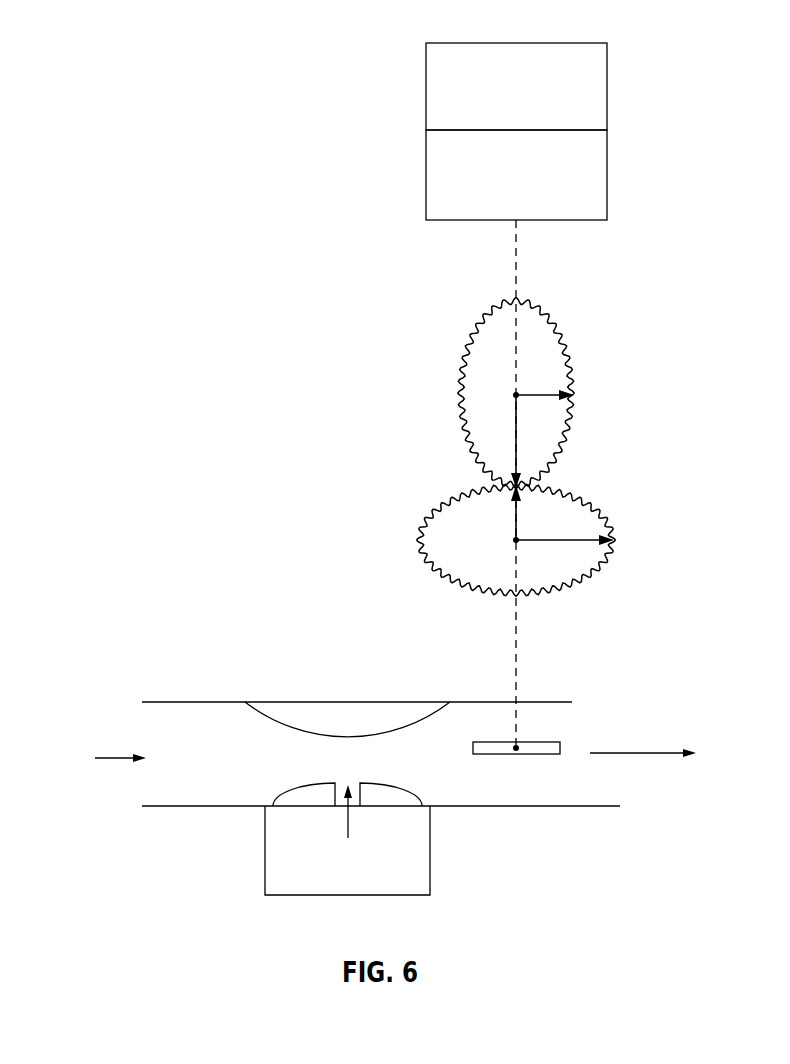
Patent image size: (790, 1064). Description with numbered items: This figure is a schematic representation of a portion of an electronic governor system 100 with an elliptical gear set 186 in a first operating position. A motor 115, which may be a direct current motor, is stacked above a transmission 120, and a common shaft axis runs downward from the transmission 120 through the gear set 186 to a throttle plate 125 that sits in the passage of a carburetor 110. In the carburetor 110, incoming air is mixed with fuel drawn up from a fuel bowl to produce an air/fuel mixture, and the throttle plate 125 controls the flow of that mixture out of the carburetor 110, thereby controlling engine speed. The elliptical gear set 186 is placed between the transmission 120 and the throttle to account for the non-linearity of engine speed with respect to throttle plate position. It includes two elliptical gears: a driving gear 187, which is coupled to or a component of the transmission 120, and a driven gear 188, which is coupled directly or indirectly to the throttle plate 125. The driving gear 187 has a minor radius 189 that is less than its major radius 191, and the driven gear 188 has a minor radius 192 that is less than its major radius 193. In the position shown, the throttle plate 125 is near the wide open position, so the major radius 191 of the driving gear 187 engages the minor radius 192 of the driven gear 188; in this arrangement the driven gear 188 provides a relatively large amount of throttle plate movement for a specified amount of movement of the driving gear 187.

The electronic governor system 100 is at (279, 419).
The carburetor 110 is at (202, 807).
The motor 115 is at (492, 43).
The transmission 120 is at (492, 222).
The throttle plate 125 is at (533, 755).
The elliptical gear set 186 is at (626, 438).
The driving gear 187 is at (480, 325).
The driven gear 188 is at (450, 500).
The minor radius 189 is at (546, 392).
The major radius 191 is at (514, 447).
The minor radius 192 is at (515, 518).
The major radius 193 is at (588, 536).